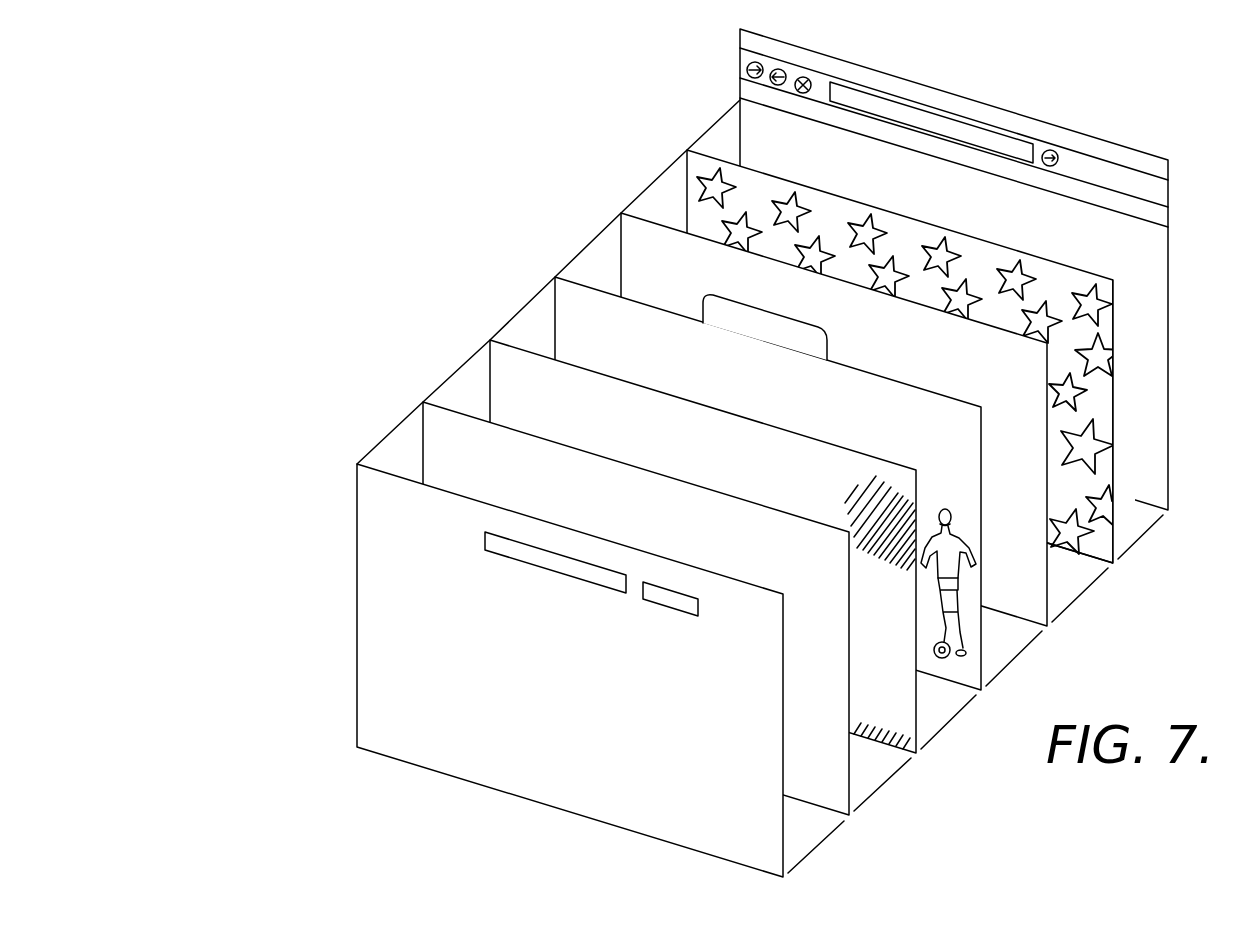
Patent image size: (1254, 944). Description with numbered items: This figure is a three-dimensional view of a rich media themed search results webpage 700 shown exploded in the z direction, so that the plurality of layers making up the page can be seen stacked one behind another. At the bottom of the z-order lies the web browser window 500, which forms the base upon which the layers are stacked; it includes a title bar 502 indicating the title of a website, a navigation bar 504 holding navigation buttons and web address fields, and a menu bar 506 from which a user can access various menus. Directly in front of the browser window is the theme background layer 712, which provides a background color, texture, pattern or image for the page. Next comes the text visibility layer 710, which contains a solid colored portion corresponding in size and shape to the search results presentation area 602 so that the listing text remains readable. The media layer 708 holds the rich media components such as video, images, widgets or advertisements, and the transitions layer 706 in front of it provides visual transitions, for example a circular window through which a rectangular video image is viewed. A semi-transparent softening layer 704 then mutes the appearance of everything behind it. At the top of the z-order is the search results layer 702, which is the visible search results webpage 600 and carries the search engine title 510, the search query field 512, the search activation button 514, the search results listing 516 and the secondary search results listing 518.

The search results webpage 700 is at (306, 225).
The web browser window 500 is at (1170, 443).
The title bar 502 is at (741, 45).
The navigation bar 504 is at (741, 69).
The menu bar 506 is at (741, 92).
The search results webpage 600 is at (369, 678).
The search results presentation area 602 is at (760, 301).
The search results layer 702 is at (358, 502).
The softening layer 704 is at (423, 430).
The transitions layer 706 is at (490, 358).
The media layer 708 is at (737, 475).
The text visibility layer 710 is at (621, 236).
The theme background layer 712 is at (687, 172).
The search engine title 510 is at (419, 535).
The search query field 512 is at (498, 557).
The search activation button 514 is at (682, 615).
The search results listing 516 is at (459, 742).
The secondary search results listing 518 is at (643, 734).